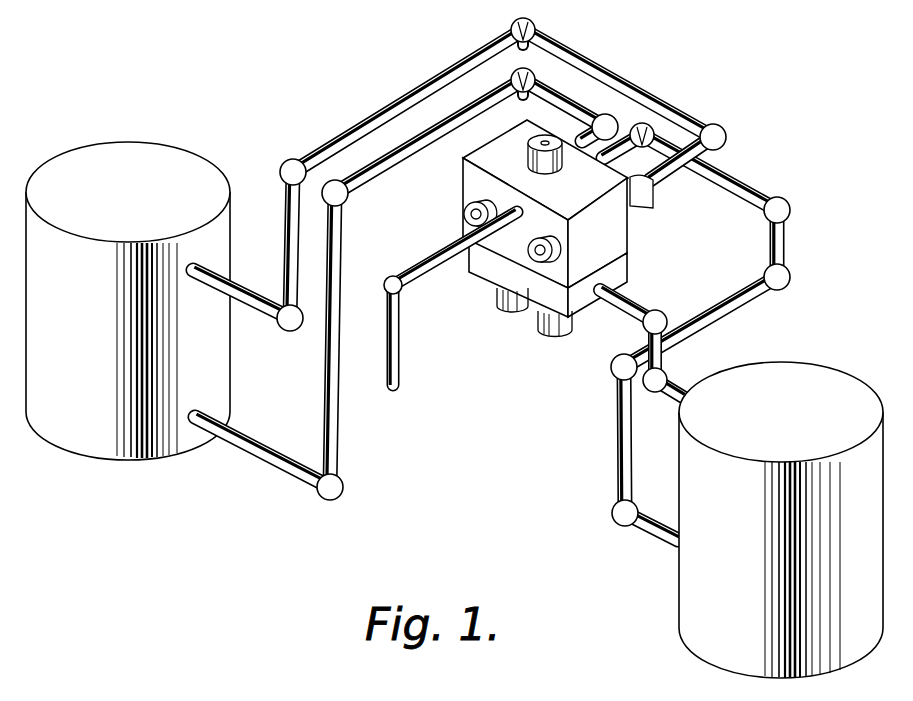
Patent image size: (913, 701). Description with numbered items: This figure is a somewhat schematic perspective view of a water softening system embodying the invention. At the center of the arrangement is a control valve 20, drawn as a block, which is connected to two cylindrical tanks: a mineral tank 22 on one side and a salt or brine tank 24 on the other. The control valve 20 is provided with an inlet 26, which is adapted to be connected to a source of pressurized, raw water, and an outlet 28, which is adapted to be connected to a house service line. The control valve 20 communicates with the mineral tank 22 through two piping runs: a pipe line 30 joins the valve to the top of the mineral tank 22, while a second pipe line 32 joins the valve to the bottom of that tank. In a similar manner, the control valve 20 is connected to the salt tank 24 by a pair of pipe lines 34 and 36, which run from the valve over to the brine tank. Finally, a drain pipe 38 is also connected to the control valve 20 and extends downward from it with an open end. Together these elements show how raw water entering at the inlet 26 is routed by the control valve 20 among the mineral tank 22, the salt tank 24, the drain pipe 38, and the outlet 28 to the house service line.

The control valve 20 is at (640, 248).
The mineral tank 22 is at (134, 206).
The salt or brine tank 24 is at (794, 424).
The inlet 26 is at (537, 254).
The outlet 28 is at (463, 214).
The pipe line 30 is at (393, 105).
The pipe line 32 is at (407, 144).
The pipe line 34 is at (668, 380).
The pipe line 36 is at (669, 543).
The drain pipe 38 is at (404, 373).